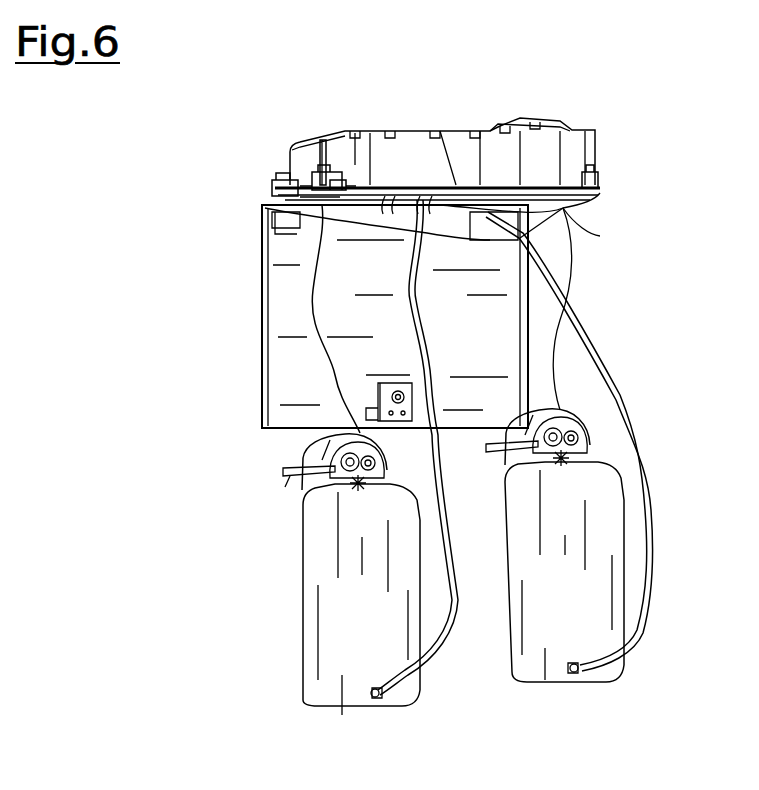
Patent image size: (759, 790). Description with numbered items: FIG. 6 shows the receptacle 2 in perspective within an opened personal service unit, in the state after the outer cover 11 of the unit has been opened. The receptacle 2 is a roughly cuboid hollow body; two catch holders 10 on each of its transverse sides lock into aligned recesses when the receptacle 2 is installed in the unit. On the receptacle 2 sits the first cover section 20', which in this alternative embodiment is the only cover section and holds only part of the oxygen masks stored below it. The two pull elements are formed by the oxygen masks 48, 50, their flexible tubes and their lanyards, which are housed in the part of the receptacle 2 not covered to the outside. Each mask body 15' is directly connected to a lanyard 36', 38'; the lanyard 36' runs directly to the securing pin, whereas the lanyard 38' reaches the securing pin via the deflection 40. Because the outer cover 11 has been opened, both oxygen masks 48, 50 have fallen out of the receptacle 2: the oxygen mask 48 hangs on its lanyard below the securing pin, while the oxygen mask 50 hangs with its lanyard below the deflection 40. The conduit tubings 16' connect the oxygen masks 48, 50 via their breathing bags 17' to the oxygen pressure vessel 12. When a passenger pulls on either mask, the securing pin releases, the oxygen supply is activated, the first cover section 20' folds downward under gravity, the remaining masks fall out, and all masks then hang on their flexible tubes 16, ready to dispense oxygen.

The receptacle 2 is at (422, 153).
The catch holder 10 is at (268, 183).
The outer cover 11 is at (478, 346).
The oxygen pressure vessel 12 is at (402, 205).
The mask body 15' is at (430, 422).
The flexible tube 16 is at (434, 474).
The conduit tubing 16' is at (622, 442).
The breathing bag 17' is at (463, 588).
The first cover section 20' is at (478, 151).
The lanyard 36' is at (260, 319).
The lanyard 38' is at (604, 309).
The deflection 40 is at (580, 213).
The oxygen mask 48 is at (290, 548).
The oxygen mask 50 is at (589, 436).